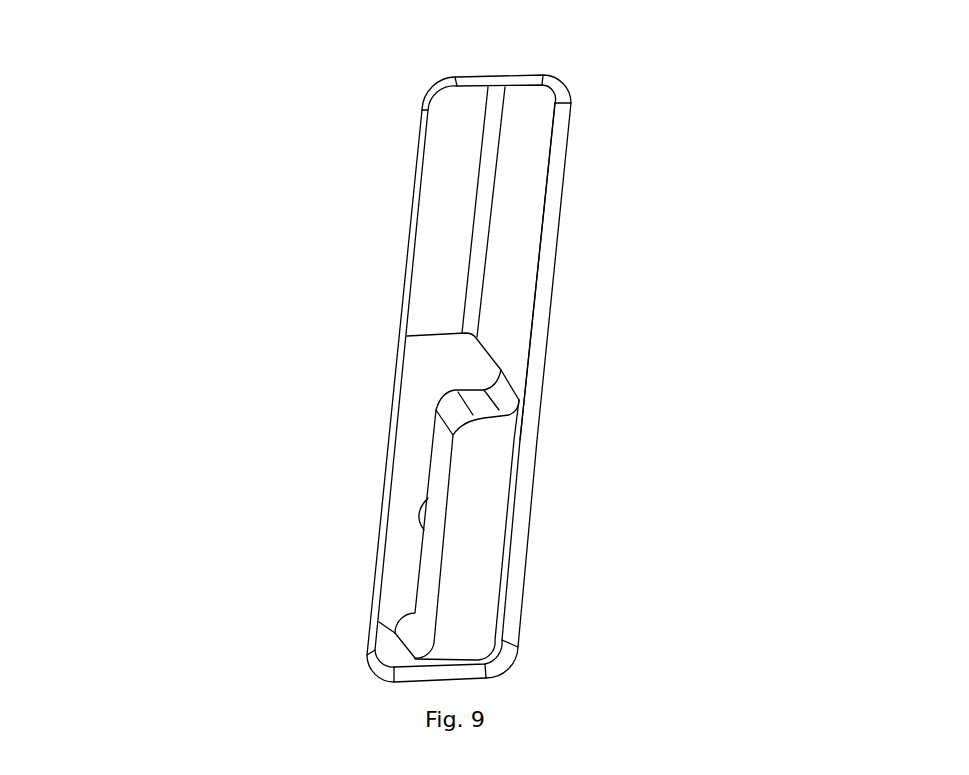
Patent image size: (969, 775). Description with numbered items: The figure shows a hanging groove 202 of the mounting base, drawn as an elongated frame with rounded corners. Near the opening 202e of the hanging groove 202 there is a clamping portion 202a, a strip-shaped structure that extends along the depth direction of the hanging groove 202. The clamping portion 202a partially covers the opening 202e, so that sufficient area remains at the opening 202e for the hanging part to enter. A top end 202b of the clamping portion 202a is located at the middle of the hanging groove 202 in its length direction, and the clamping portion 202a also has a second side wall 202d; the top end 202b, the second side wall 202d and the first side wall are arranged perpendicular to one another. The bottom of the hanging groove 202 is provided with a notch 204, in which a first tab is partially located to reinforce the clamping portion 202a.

The hanging groove 202 is at (463, 202).
The opening 202e is at (532, 288).
The top end 202b is at (472, 407).
The notch 204 is at (420, 383).
The second side wall 202d is at (430, 552).
The clamping portion 202a is at (477, 528).